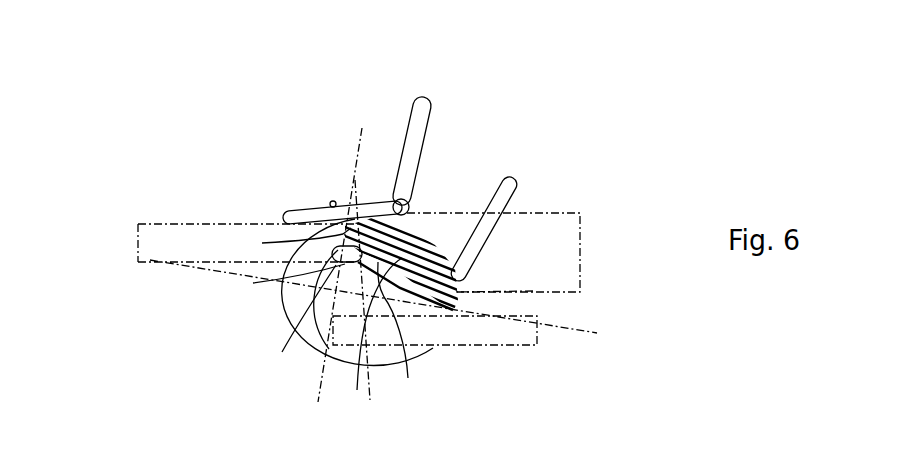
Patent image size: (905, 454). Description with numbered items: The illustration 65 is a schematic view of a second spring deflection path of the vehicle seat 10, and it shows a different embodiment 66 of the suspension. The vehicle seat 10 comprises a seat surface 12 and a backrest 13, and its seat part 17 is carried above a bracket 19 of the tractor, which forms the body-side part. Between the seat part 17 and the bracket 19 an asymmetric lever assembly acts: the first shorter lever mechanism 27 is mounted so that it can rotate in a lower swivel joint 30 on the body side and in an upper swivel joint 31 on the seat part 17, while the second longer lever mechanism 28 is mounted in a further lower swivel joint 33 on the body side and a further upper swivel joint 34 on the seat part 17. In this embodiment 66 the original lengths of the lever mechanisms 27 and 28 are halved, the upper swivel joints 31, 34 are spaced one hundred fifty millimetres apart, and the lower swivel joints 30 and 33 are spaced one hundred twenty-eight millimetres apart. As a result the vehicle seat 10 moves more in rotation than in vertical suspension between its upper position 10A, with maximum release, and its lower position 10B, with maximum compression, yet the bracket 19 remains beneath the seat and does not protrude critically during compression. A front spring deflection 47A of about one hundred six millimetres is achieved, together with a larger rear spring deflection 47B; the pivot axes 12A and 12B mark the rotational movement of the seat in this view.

The vehicle seat 10 is at (252, 333).
The upper position 10A is at (457, 157).
The lower position 10B is at (547, 291).
The seat surface 12 is at (333, 200).
The first pivot axis 12A is at (287, 185).
The second pivot axis 12B is at (388, 180).
The backrest 13 is at (421, 92).
The seat part 17 is at (290, 212).
The bracket 19 is at (523, 333).
The first shorter lever mechanism 27 is at (336, 297).
The second longer lever mechanism 28 is at (366, 339).
The lower swivel joint 30 is at (350, 305).
The upper swivel joint 31 is at (294, 246).
The further lower swivel joint 33 is at (400, 306).
The further upper swivel joint 34 is at (432, 194).
The front spring deflection 47A is at (202, 240).
The second frame section 47B is at (580, 252).
The illustration 65 is at (593, 124).
The different embodiment 66 is at (188, 328).